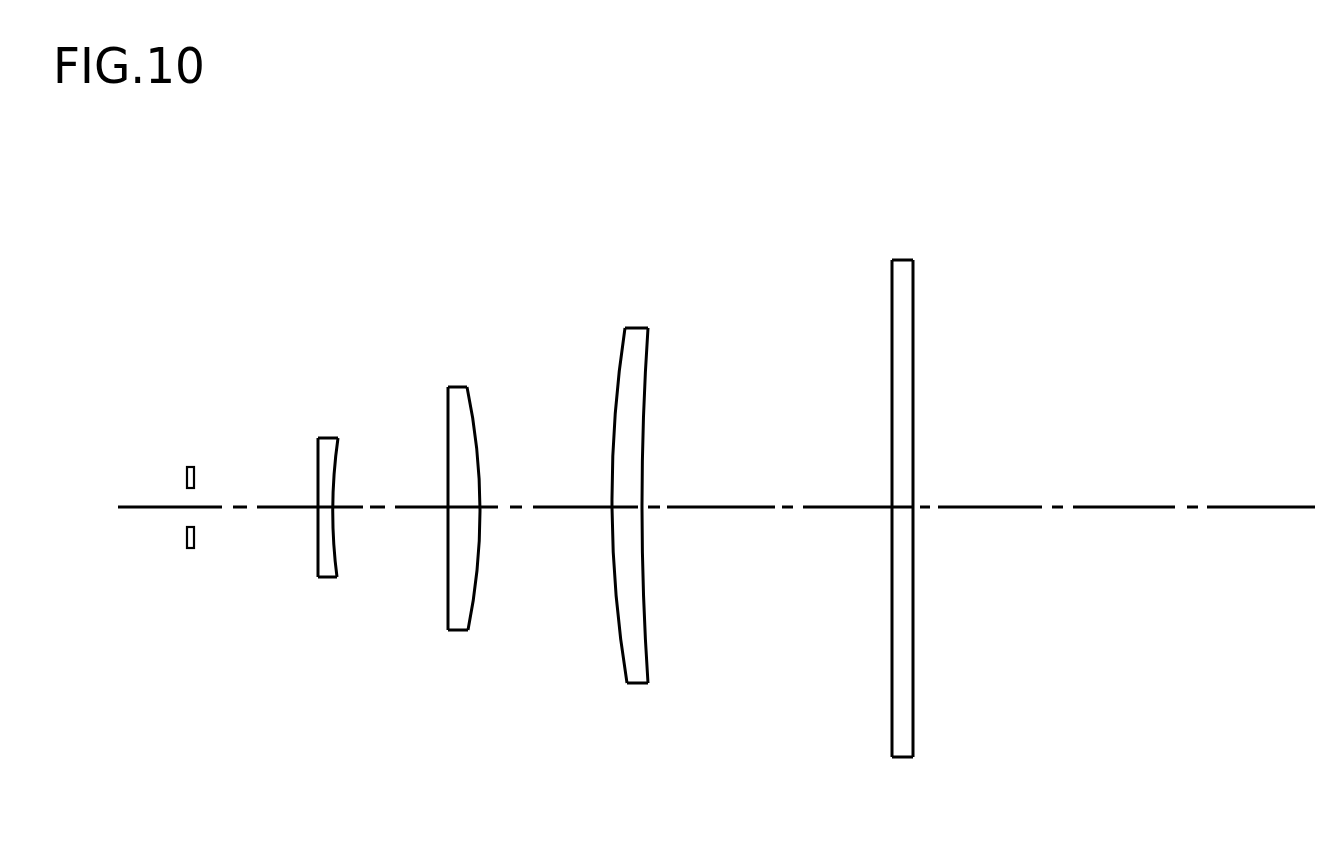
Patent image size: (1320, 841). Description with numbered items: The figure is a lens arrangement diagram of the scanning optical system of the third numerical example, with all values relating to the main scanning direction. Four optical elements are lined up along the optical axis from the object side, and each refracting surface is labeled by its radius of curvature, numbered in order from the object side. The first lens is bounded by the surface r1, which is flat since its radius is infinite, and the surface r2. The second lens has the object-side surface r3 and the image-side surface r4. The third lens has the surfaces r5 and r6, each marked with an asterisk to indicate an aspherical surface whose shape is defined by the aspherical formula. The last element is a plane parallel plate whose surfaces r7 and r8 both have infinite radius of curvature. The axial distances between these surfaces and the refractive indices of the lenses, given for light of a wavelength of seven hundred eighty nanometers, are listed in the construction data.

The first surface radius of curvature r1 is at (317, 457).
The second surface radius of curvature r2 is at (335, 460).
The third surface radius of curvature r3 is at (448, 420).
The fourth surface radius of curvature r4 is at (475, 427).
The fifth surface radius of curvature r5 is at (597, 470).
The sixth surface radius of curvature r6 is at (716, 487).
The seventh surface radius of curvature r7 is at (890, 302).
The eighth surface radius of curvature r8 is at (915, 325).